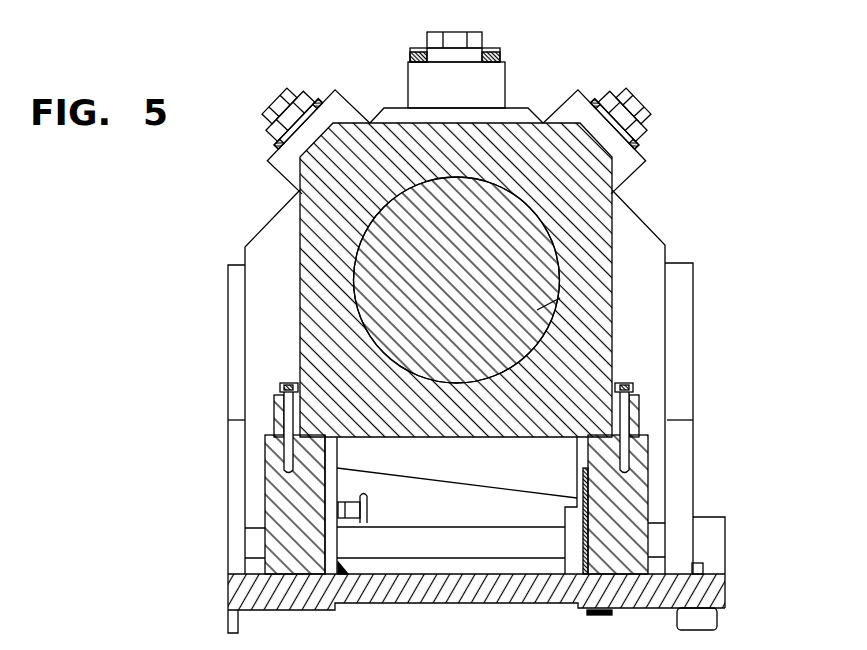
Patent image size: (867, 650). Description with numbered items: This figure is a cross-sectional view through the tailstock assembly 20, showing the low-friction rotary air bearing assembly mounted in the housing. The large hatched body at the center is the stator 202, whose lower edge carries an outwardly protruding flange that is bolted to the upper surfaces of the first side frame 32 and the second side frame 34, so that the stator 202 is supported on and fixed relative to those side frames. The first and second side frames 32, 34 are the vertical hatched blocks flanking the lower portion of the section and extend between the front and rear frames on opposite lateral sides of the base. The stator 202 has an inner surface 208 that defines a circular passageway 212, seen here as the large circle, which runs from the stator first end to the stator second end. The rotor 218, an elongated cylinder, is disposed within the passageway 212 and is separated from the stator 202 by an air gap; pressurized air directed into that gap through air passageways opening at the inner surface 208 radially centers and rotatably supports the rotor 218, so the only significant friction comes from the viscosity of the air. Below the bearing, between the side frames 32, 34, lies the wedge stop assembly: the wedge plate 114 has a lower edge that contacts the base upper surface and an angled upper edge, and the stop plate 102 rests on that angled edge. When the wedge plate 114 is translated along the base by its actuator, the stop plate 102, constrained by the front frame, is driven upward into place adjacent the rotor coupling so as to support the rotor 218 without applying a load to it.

The apparatus 20 is at (721, 84).
The stator 202 is at (593, 237).
The inner surface 208 is at (436, 194).
The circular passageway 212 is at (400, 194).
The rotor 218 is at (537, 310).
The first side frame 32 is at (642, 477).
The second side frame 34 is at (266, 472).
The stop plate 102 is at (470, 472).
The wedge plate 114 is at (394, 514).